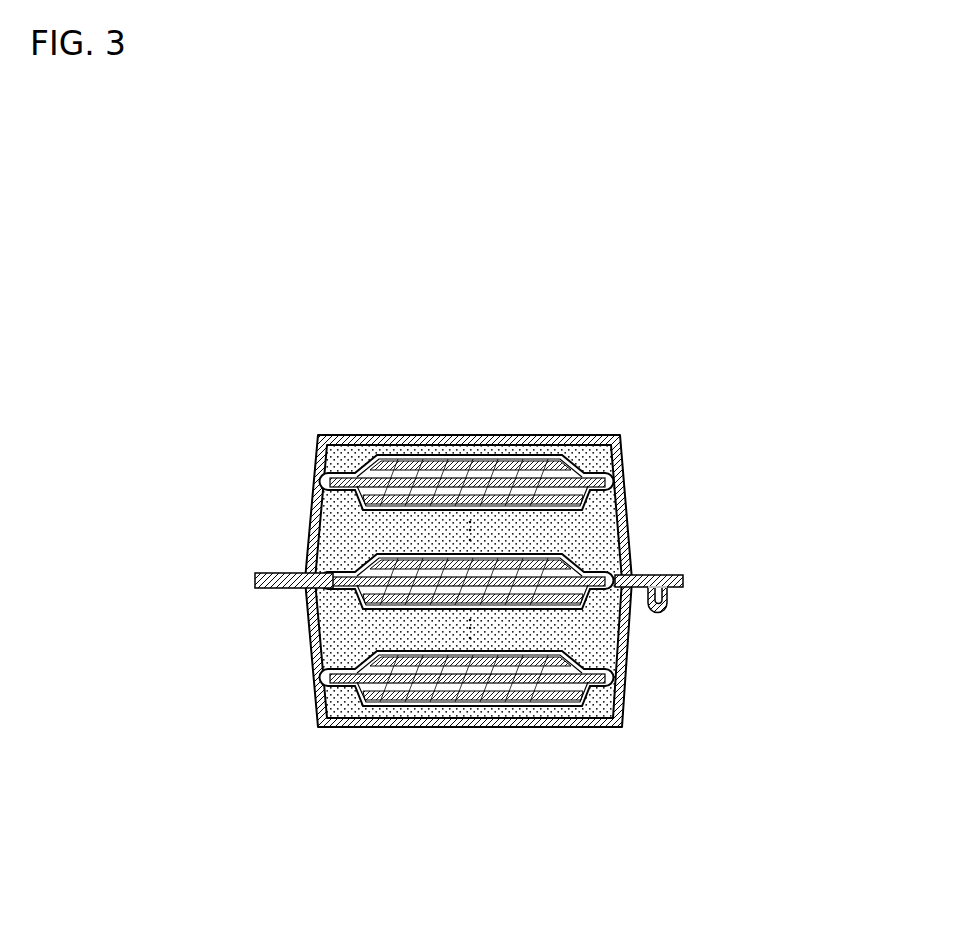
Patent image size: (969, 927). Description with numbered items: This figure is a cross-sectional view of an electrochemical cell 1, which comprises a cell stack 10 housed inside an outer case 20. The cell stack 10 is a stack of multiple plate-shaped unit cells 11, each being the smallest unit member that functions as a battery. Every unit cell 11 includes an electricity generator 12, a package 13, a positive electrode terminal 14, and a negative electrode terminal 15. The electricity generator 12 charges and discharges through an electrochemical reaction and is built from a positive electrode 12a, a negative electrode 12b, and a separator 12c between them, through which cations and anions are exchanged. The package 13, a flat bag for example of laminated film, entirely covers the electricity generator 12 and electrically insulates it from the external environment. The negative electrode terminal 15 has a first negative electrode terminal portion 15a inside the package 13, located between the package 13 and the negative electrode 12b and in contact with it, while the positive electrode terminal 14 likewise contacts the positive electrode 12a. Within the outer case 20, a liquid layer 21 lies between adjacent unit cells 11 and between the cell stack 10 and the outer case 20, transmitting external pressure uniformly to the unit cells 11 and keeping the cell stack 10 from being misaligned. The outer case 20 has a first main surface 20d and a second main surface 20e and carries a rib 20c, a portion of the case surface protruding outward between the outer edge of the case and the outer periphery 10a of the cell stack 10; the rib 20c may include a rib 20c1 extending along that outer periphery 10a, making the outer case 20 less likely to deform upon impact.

The electrochemical cell 1 is at (595, 299).
The cell stack 10 is at (795, 437).
The outer periphery of the cell stack 10a is at (316, 703).
The unit cell 11 is at (593, 458).
The electricity generator 12 is at (408, 378).
The positive electrode 12a is at (500, 472).
The negative electrode 12b is at (423, 494).
The separator 12c is at (454, 478).
The package 13 is at (408, 512).
The positive electrode terminal 14 is at (419, 481).
The negative electrode terminal 15 is at (527, 457).
The first negative electrode terminal portion 15a is at (372, 517).
The outer case 20 is at (607, 436).
The rib 20c is at (668, 600).
The rib extending along the outer periphery of the cell stack 20c1 is at (666, 612).
The first main surface of the outer case 20d is at (590, 728).
The second main surface of the outer case 20e is at (580, 436).
The liquid layer 21 is at (603, 520).